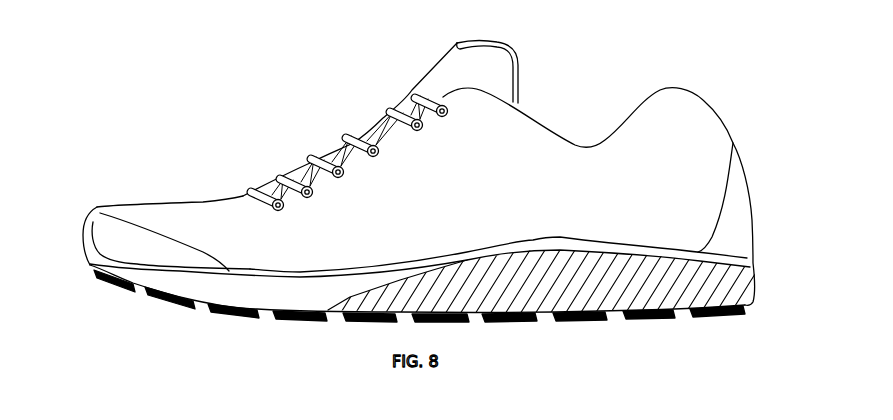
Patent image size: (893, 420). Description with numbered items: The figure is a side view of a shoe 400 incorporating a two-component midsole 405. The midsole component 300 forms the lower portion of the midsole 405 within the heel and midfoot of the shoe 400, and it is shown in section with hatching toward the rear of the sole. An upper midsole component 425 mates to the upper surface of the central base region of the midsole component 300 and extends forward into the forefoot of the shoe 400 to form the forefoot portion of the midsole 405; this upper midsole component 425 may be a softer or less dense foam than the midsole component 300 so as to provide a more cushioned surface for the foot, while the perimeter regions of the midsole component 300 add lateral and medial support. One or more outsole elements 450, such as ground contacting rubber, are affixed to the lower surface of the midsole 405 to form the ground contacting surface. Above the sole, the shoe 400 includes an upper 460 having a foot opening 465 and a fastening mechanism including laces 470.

The shoe 400 is at (441, 213).
The midsole 405 is at (170, 278).
The upper midsole component 425 is at (257, 290).
The outsole elements 450 is at (297, 318).
The upper 460 is at (222, 213).
The foot opening 465 is at (592, 133).
The laces 470 is at (340, 140).
The midsole component 300 is at (597, 290).